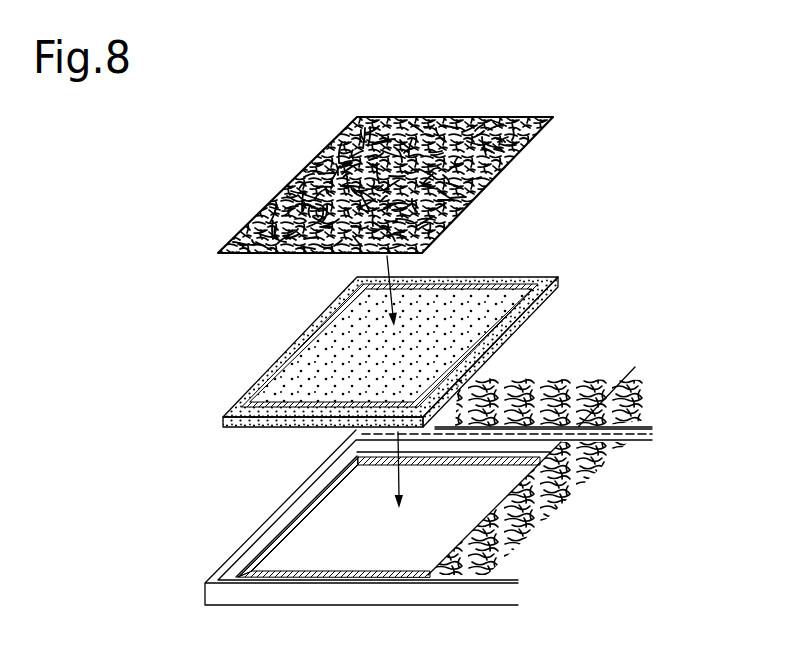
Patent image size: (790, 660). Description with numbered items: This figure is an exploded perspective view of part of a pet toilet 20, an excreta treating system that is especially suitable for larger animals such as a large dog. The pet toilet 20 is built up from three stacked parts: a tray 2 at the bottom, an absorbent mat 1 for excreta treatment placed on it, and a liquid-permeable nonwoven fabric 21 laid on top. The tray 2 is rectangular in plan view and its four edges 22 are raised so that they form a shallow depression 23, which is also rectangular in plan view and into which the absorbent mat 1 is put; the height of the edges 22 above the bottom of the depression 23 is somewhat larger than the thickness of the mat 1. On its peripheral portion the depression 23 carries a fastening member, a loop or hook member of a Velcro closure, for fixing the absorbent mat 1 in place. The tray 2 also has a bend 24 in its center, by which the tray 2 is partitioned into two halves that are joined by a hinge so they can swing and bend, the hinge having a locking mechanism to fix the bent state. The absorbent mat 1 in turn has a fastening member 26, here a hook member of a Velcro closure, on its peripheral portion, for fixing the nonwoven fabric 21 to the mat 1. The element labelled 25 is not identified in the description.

The pet toilet 20 is at (659, 150).
The liquid-permeable nonwoven fabric 21 is at (512, 128).
The absorbent mat 1 is at (478, 304).
The fastening member 26 is at (300, 343).
The tray 2 is at (198, 571).
The edges 22 is at (264, 524).
The depression 23 is at (333, 524).
The bend 24 is at (664, 431).
The sealing layer 25 is at (352, 578).